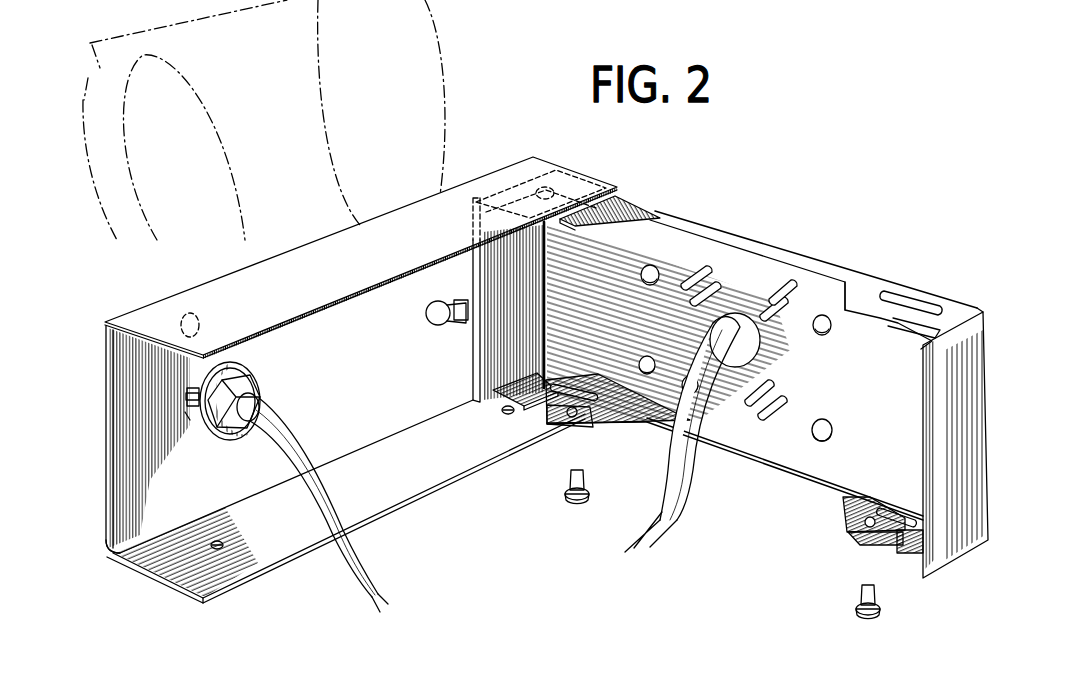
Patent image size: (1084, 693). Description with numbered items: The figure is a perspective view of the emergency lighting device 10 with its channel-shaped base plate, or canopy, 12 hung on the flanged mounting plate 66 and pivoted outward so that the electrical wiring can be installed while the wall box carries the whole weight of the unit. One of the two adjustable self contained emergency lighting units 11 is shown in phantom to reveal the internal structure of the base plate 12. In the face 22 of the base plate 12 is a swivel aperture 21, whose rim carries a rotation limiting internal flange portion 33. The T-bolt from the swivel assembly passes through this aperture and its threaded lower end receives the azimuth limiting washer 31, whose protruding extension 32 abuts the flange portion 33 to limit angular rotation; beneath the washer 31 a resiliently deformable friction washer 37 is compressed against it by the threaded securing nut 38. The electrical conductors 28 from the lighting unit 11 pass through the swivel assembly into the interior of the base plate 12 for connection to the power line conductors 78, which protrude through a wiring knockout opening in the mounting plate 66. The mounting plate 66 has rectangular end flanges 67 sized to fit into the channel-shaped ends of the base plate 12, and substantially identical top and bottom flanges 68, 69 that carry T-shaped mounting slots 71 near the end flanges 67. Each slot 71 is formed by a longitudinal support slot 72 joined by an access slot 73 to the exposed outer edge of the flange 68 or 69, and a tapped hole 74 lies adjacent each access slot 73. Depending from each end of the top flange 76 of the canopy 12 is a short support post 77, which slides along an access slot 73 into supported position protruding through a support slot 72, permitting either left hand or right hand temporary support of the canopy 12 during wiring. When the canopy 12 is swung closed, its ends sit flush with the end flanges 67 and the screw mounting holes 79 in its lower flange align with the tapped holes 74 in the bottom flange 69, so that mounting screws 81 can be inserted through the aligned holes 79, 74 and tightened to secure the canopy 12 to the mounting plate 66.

The emergency lighting device 10 is at (739, 211).
The self contained emergency lighting unit 11 is at (186, 82).
The channel-shaped base plate 12 is at (345, 406).
The swivel aperture 21 is at (426, 321).
The face of base plate 22 is at (110, 555).
The electrical conductors 28 is at (336, 498).
The azimuth limiting washer 31 is at (226, 408).
The protruding extension 32 is at (189, 396).
The rotation limiting internal flange portion 33 is at (460, 298).
The resiliently deformable friction washer 37 is at (258, 391).
The threaded securing nut 38 is at (238, 430).
The flanged mounting plate 66 is at (781, 245).
The rectangular end flanges 67 is at (946, 372).
The top flange 68 is at (630, 207).
The bottom flange 69 is at (845, 503).
The T-shaped mounting slots 71 is at (933, 301).
The longitudinal support slot 72 is at (905, 292).
The access slot 73 is at (881, 326).
The tapped hole 74 is at (588, 426).
The top flange of canopy 76 is at (322, 287).
The short support post 77 is at (533, 166).
The power line conductors 78 is at (686, 488).
The screw mounting holes 79 is at (223, 543).
The mounting screws 81 is at (585, 483).